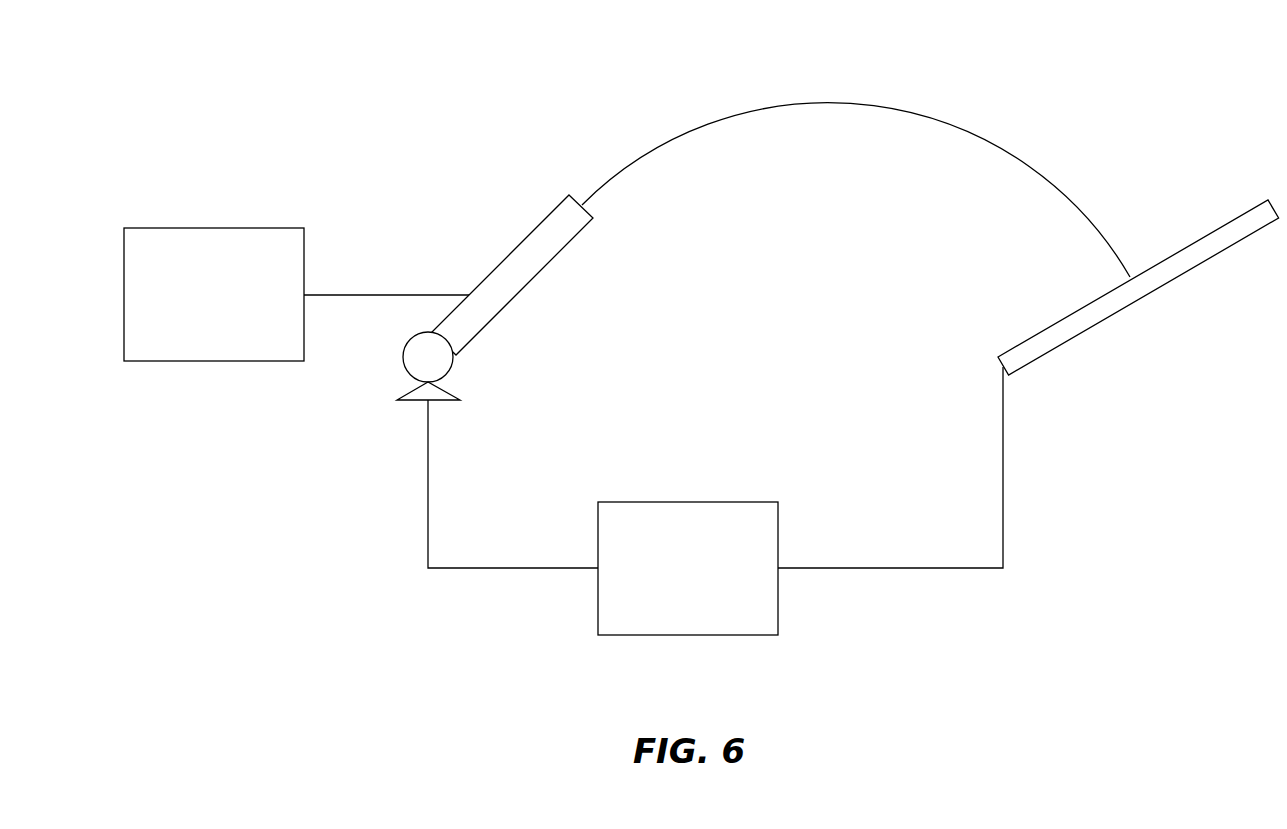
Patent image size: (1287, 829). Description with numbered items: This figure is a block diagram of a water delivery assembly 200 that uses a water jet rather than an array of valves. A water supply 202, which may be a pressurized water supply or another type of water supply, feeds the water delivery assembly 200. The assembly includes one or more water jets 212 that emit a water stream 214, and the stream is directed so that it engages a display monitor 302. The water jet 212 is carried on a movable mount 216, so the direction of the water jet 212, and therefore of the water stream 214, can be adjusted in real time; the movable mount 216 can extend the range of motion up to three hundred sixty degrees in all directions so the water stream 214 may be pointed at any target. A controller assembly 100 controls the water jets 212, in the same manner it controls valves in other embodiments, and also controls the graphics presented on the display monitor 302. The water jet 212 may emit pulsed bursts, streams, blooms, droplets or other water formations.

The water delivery assembly 200 is at (298, 80).
The water supply 202 is at (215, 228).
The water jet 212 is at (505, 258).
The water stream 214 is at (830, 102).
The movable mount 216 is at (403, 365).
The display monitor 302 is at (1210, 233).
The controller assembly 100 is at (688, 502).